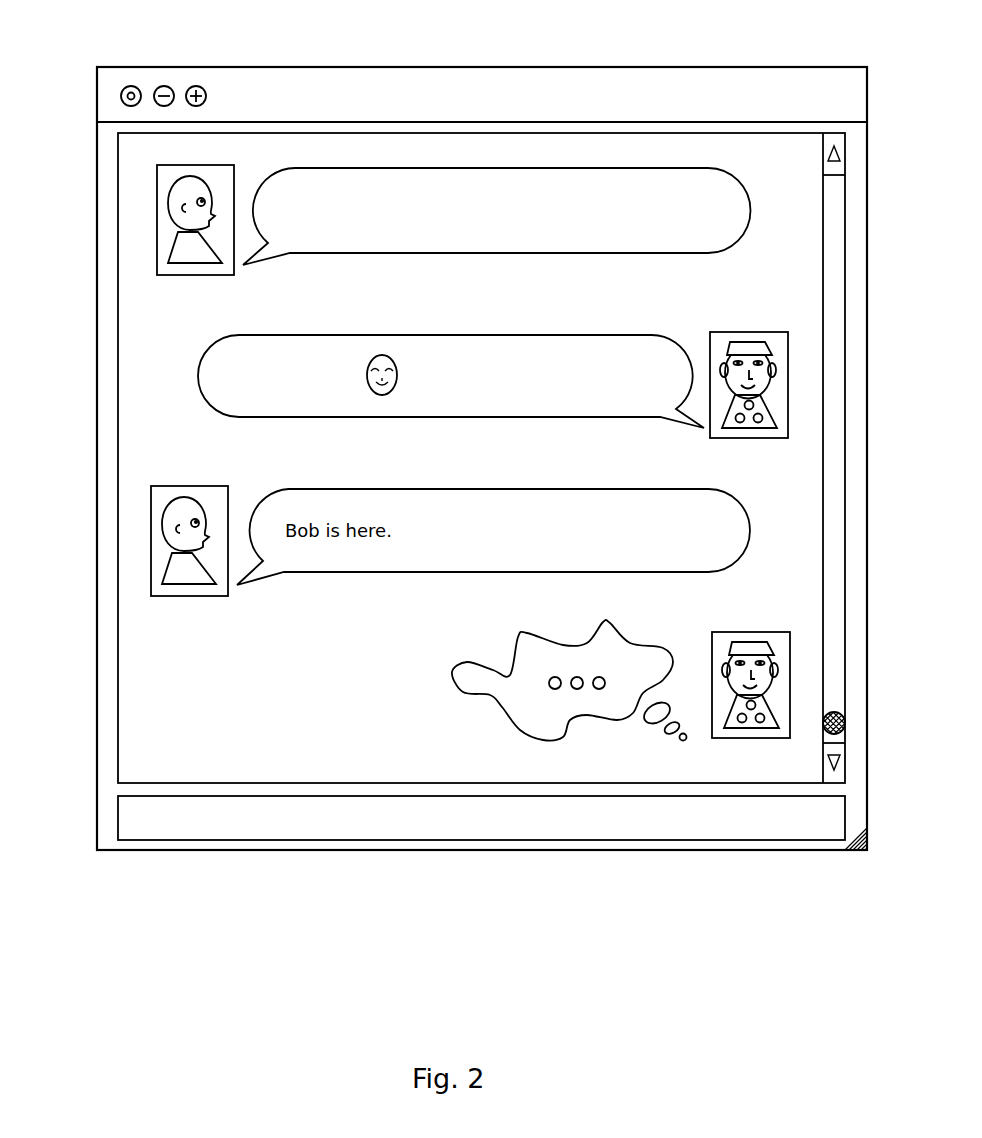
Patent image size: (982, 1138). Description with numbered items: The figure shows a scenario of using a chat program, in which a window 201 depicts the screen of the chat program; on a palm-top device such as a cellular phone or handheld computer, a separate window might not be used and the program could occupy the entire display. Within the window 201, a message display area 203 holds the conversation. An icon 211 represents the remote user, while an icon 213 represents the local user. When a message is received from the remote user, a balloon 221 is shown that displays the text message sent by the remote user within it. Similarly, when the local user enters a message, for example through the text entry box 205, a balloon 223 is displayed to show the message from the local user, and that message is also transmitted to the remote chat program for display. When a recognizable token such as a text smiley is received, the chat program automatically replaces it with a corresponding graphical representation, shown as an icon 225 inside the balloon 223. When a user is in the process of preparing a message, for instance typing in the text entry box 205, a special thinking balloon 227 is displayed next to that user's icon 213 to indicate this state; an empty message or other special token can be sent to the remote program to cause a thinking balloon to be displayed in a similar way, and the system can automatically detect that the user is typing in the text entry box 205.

The window 201 is at (798, 67).
The chat message display area 203 is at (118, 658).
The text entry box 205 is at (195, 842).
The icon 211 is at (183, 277).
The icon 213 is at (757, 439).
The balloon 221 is at (415, 255).
The balloon 223 is at (481, 417).
The icon 225 is at (398, 373).
The thinking balloon 227 is at (500, 702).